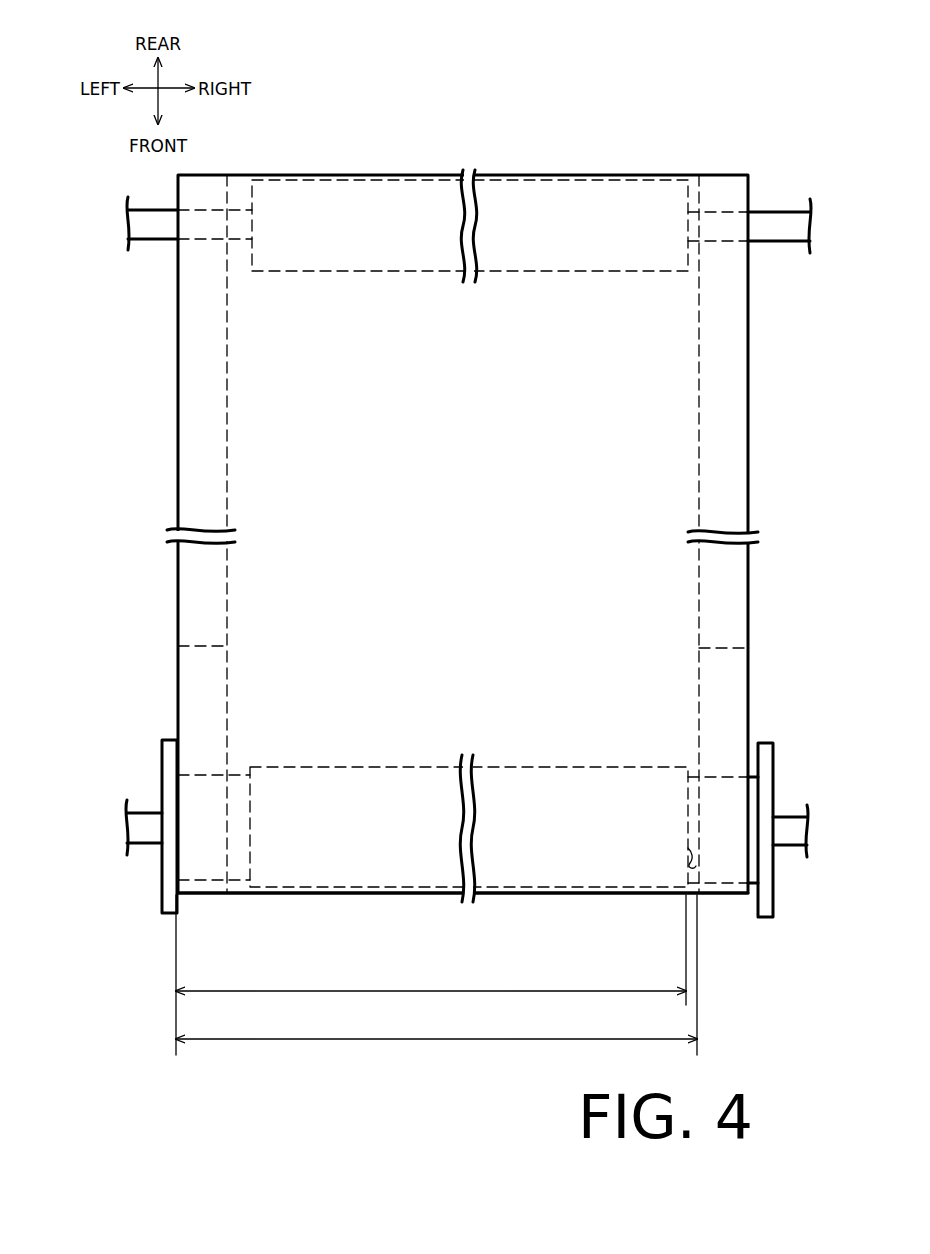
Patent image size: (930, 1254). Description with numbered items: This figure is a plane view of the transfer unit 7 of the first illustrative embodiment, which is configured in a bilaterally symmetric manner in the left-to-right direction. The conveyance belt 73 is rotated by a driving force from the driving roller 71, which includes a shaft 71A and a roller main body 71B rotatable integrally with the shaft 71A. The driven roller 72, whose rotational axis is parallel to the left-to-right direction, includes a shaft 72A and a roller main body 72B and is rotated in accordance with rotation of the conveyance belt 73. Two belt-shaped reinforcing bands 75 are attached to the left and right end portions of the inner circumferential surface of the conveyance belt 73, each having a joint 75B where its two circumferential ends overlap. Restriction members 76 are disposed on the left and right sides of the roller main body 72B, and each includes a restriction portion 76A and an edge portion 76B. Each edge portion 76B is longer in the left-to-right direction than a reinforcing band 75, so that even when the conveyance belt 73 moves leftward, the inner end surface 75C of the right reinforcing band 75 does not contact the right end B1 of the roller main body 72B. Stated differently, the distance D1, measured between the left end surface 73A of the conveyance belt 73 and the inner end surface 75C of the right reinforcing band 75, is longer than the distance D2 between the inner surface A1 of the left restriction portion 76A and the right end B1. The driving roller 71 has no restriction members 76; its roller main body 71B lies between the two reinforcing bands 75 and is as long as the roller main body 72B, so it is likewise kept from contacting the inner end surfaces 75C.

The transfer unit 7 is at (592, 112).
The driving roller 71 is at (469, 200).
The shaft 71A is at (152, 228).
The roller main body 71B is at (378, 213).
The driven roller 72 is at (478, 865).
The shaft 72A is at (788, 835).
The roller main body 72B is at (533, 870).
The conveyance belt 73 is at (663, 375).
The left end surface 73A is at (175, 870).
The reinforcing band 75 is at (205, 428).
The joint 75B is at (200, 647).
The inner end surface 75C is at (690, 865).
The restriction member 76 is at (420, 816).
The restriction portion 76A is at (170, 800).
The edge portion 76B is at (208, 785).
The inner surface A1 is at (178, 828).
The right end B1 is at (690, 850).
The distance D1 is at (436, 975).
The distance D2 is at (431, 975).